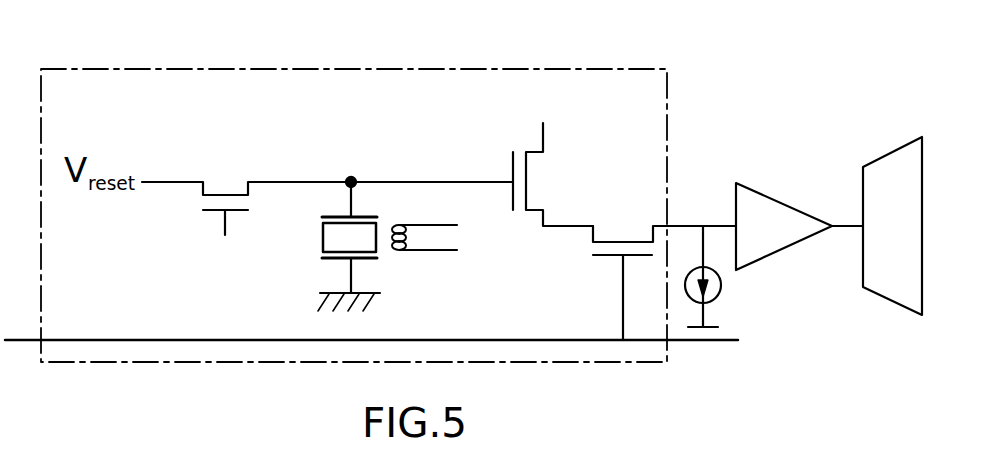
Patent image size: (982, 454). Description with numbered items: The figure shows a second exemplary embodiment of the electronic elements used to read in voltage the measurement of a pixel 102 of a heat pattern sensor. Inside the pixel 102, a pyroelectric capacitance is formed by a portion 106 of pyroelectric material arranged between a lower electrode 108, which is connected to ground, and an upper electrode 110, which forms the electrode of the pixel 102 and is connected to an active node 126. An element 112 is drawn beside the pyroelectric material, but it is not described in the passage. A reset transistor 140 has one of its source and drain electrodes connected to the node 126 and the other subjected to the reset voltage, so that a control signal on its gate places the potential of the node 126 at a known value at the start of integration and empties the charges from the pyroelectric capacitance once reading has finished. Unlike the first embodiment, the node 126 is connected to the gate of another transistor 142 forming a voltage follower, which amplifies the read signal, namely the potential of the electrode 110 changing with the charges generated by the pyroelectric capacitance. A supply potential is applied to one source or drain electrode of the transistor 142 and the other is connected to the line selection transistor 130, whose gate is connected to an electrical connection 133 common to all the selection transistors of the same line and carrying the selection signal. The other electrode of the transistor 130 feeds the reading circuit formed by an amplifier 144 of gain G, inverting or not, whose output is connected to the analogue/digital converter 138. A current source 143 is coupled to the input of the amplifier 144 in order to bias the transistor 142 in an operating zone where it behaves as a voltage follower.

The pixel 102 is at (595, 68).
The reset transistor 140 is at (222, 174).
The active node 126 is at (351, 175).
The upper electrode 110 is at (332, 214).
The portion of pyroelectric material 106 is at (367, 241).
The lower electrode 108 is at (333, 262).
The field / coil element 112 is at (408, 239).
The transistor forming a voltage follower 142 is at (551, 166).
The line selection transistor 130 is at (619, 235).
The electrical connection 133 is at (540, 338).
The current source 143 is at (722, 289).
The amplifier 144 is at (782, 221).
The analogue/digital converter 138 is at (898, 166).